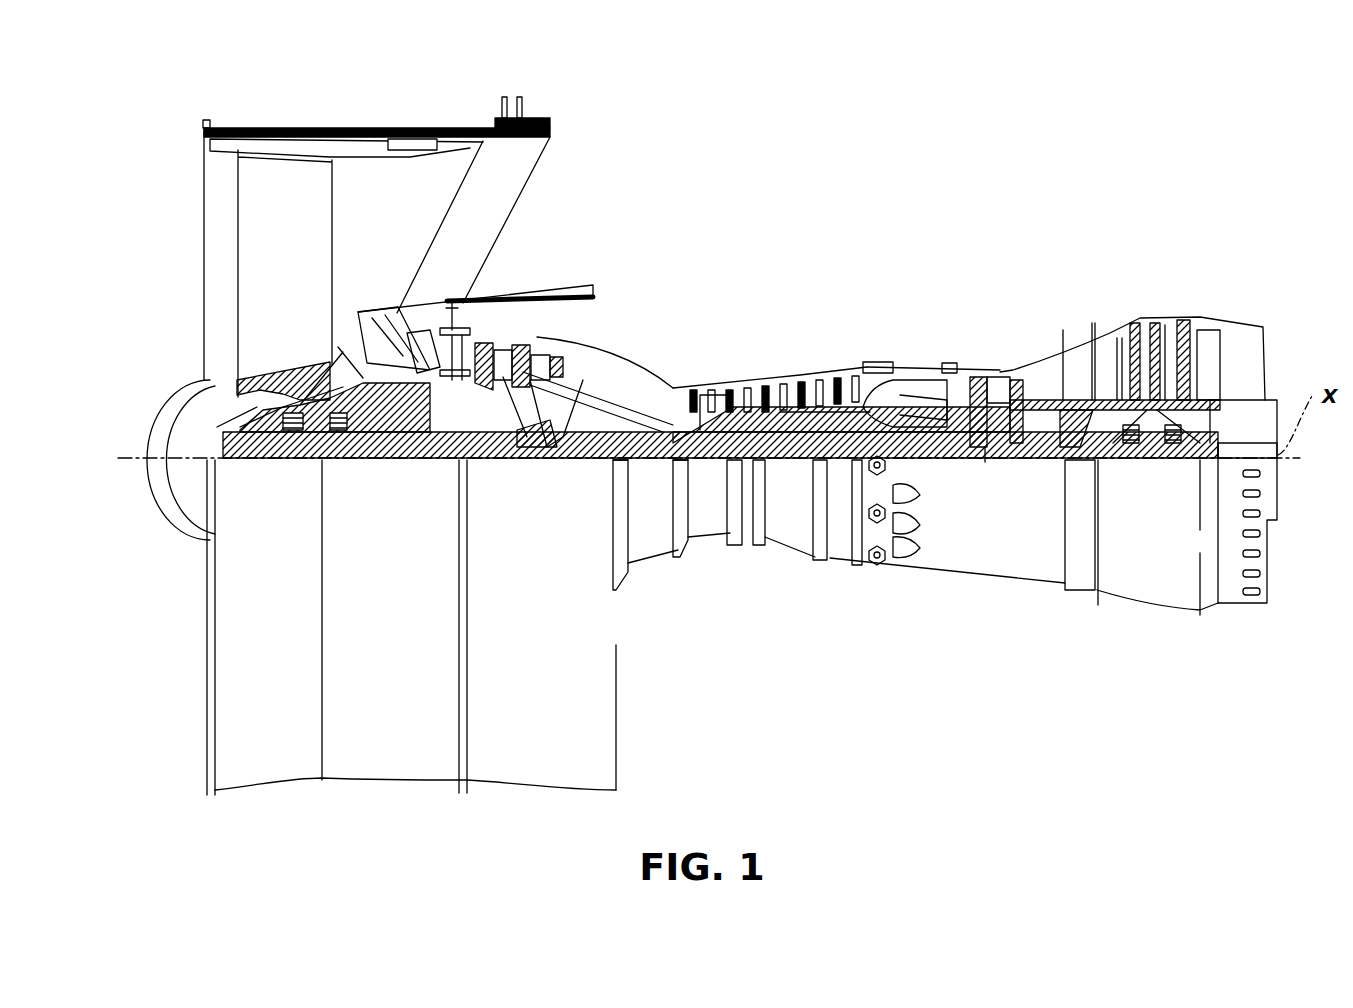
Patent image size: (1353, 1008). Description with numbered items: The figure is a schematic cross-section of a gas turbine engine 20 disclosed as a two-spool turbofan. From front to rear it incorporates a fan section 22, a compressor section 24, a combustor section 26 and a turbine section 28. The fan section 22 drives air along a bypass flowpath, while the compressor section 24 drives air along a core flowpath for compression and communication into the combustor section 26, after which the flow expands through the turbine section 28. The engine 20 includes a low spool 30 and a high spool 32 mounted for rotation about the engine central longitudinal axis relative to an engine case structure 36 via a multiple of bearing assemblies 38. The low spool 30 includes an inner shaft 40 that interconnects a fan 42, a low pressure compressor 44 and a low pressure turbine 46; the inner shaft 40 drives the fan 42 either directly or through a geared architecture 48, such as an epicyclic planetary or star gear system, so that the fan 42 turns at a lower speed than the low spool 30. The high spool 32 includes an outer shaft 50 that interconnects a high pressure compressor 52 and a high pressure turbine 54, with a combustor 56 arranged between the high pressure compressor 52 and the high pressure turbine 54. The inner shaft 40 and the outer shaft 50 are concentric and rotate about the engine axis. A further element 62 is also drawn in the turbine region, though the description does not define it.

The gas turbine engine 20 is at (1039, 184).
The fan section 22 is at (458, 104).
The compressor section 24 is at (868, 248).
The combustor section 26 is at (931, 313).
The turbine section 28 is at (1121, 323).
The low spool 30 is at (797, 463).
The high spool 32 is at (828, 405).
The engine case structure 36 is at (846, 568).
The bearing assemblies 38 is at (495, 525).
The inner shaft 40 is at (640, 465).
The fan 42 is at (285, 273).
The low pressure compressor 44 is at (540, 345).
The low pressure turbine 46 is at (1132, 362).
The geared architecture 48 is at (415, 442).
The outer shaft 50 is at (987, 462).
The high pressure compressor 52 is at (780, 400).
The high pressure turbine 54 is at (990, 370).
The combustor 56 is at (925, 400).
The mid-turbine frame 62 is at (693, 464).